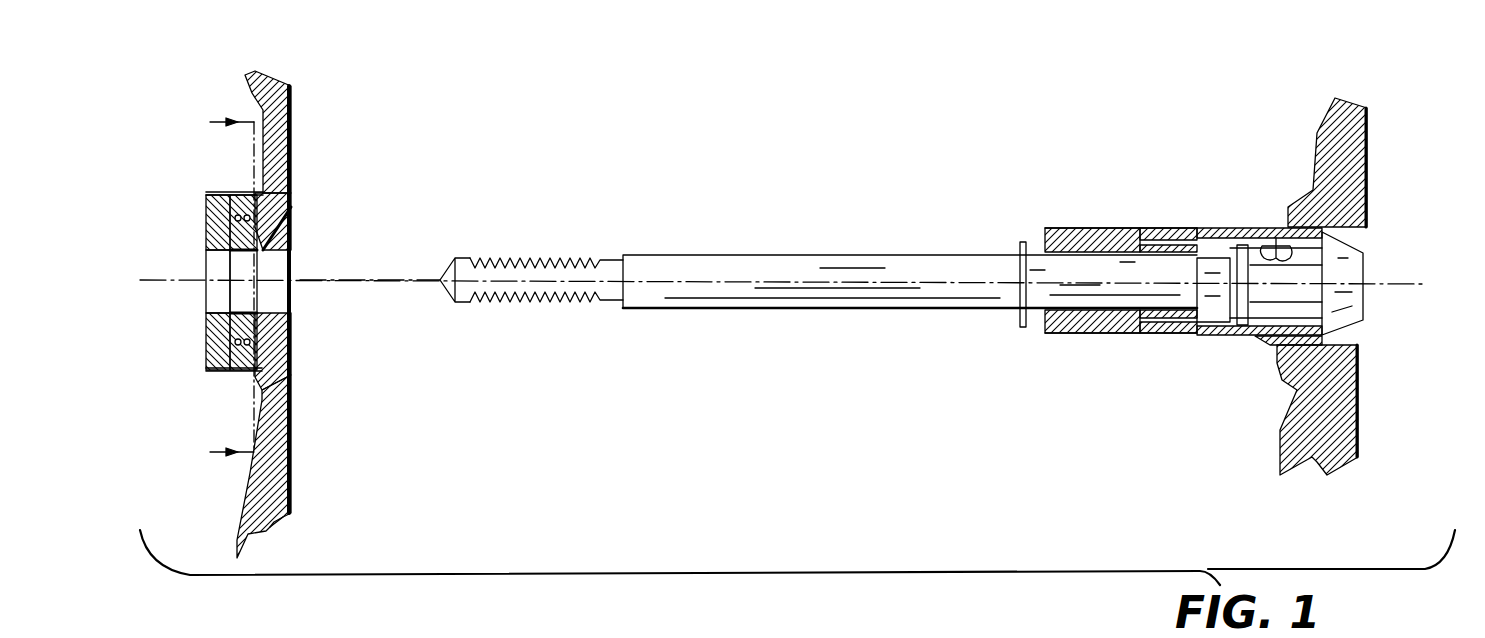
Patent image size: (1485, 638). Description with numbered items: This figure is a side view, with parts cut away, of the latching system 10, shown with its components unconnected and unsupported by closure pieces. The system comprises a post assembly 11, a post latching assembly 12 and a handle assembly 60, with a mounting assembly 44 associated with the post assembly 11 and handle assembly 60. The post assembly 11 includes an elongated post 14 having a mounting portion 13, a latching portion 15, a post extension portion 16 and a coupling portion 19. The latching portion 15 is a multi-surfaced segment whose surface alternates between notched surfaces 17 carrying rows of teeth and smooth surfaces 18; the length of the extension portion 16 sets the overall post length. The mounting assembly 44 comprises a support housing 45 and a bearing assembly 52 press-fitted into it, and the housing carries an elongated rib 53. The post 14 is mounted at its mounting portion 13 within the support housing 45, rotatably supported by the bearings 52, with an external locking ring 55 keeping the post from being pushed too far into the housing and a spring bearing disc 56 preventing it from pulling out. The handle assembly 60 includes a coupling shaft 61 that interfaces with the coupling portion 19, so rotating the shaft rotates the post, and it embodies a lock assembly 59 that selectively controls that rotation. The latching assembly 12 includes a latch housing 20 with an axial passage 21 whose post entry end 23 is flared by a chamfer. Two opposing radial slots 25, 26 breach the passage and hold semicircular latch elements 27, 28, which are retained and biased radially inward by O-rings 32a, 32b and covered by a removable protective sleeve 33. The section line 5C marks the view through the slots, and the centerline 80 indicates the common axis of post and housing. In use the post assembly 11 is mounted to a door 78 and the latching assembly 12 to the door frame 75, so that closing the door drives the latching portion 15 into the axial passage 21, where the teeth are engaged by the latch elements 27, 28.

The latching system 10 is at (662, 158).
The post assembly 11 is at (818, 327).
The post latching assembly 12 is at (268, 316).
The mounting portion 13 is at (1085, 300).
The elongated post 14 is at (910, 287).
The latching portion 15 is at (546, 289).
The post extension portion 16 is at (868, 300).
The notched surfaces 17 is at (536, 262).
The smooth surfaces 18 is at (480, 294).
The coupling portion 19 is at (1214, 300).
The latch housing 20 is at (318, 316).
The axial passage 21 is at (212, 266).
The post entry end 23 is at (291, 251).
The radial slot 25 is at (212, 208).
The radial slot 26 is at (226, 373).
The latch element 27 is at (289, 226).
The latch element 28 is at (214, 321).
The O-ring 32a is at (228, 222).
The O-ring 32b is at (287, 203).
The protective sleeve 33 is at (230, 191).
The mounting assembly 44 is at (1138, 226).
The support housing 45 is at (1106, 227).
The bearing assembly 52 is at (1158, 250).
The elongated rib 53 is at (1277, 240).
The external locking ring 55 is at (1022, 242).
The spring bearing disc 56 is at (1208, 238).
The lock assembly 59 is at (1391, 268).
The handle assembly 60 is at (1370, 250).
The coupling shaft 61 is at (1230, 324).
The door frame 75 is at (274, 526).
The door 78 is at (1303, 458).
The longitudinal axis 80 is at (395, 280).
The section line 5C is at (215, 288).